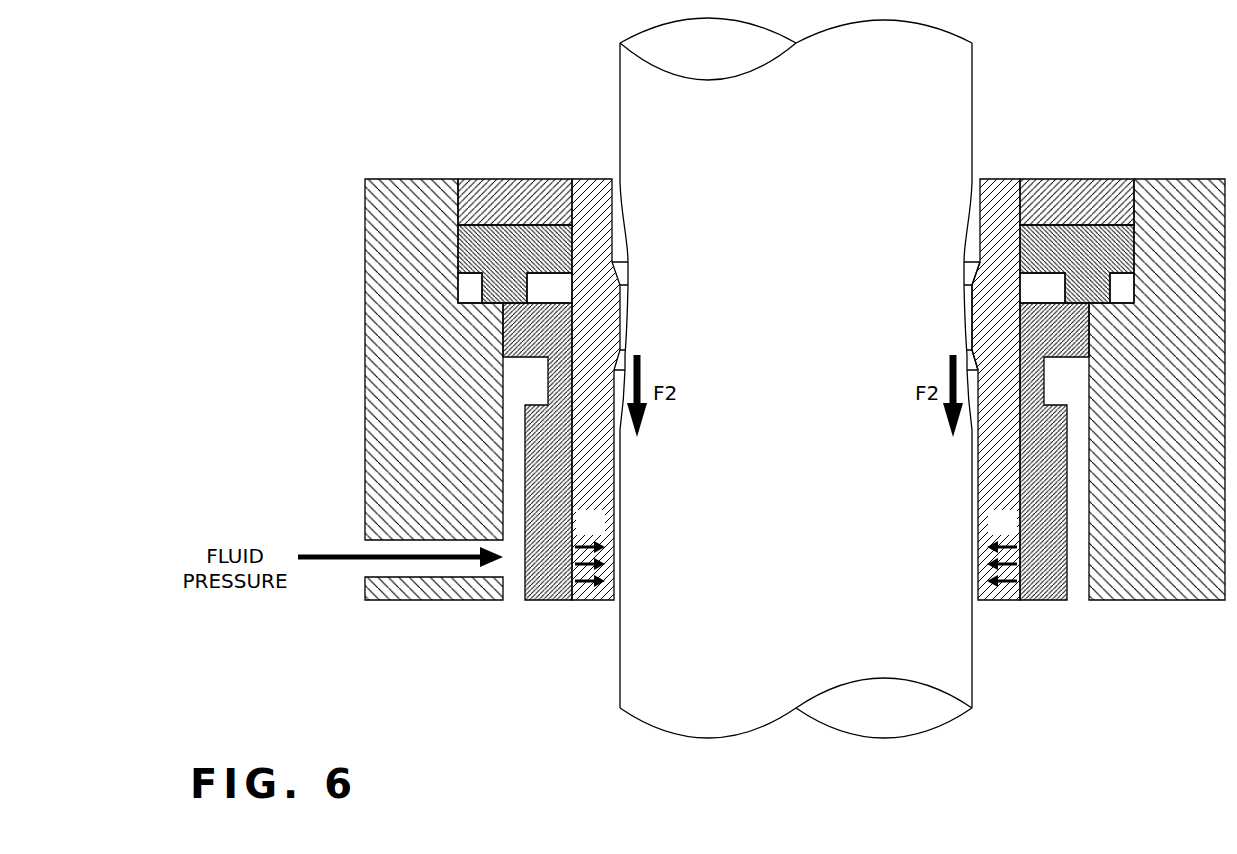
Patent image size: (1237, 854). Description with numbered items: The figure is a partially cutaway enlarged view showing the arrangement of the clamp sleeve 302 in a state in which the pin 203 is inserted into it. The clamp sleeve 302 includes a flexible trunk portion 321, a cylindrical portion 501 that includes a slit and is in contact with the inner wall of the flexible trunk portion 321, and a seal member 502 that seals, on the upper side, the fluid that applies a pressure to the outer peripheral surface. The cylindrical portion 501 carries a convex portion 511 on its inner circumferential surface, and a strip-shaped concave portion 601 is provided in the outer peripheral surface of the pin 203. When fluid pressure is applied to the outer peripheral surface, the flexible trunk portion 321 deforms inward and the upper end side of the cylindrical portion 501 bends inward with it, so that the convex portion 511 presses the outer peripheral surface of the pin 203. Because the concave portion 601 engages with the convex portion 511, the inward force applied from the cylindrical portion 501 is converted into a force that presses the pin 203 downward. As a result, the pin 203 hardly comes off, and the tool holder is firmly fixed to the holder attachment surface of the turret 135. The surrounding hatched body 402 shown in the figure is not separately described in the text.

The pin 203 is at (960, 63).
The clamp sleeve 302 is at (607, 172).
The housing 402 is at (370, 518).
The turret 135 is at (407, 600).
The flexible trunk portion 321 is at (540, 600).
The cylindrical portion 501 is at (590, 600).
The seal member 502 is at (1110, 250).
The concave portion 601 is at (968, 242).
The convex portion 511 is at (978, 318).